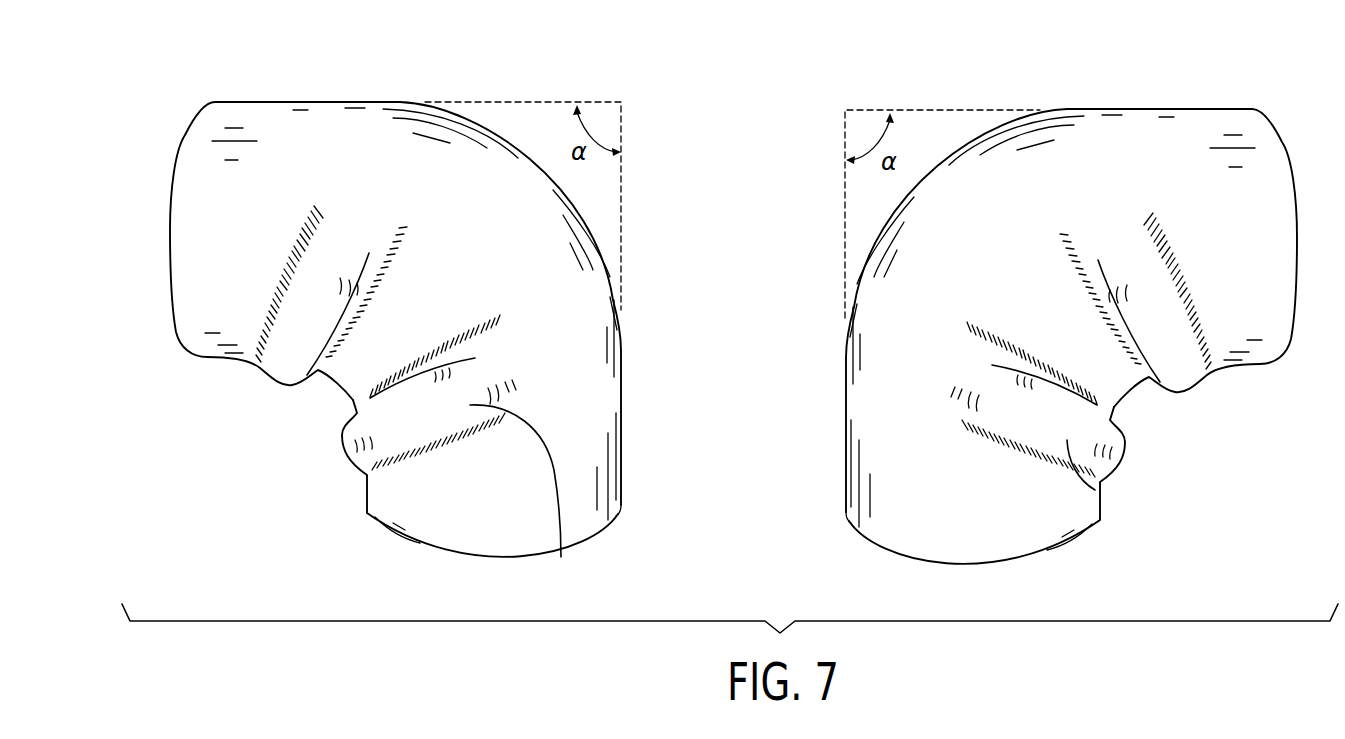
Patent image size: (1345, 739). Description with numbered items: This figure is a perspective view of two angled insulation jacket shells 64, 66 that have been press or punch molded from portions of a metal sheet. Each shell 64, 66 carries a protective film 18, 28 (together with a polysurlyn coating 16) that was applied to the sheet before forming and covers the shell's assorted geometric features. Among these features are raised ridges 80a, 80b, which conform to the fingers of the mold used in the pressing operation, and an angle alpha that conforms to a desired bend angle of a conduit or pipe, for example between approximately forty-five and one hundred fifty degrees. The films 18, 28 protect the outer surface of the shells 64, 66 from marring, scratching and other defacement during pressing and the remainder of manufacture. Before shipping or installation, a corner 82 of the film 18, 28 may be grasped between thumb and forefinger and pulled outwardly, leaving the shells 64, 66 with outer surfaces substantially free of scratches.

The polysurlyn coating 16 is at (528, 162).
The film 18 is at (203, 132).
The film 28 is at (732, 230).
The raised ridge 80a is at (561, 557).
The raised ridge 80b is at (346, 255).
The corner 82 is at (623, 513).
The shell 64 is at (497, 558).
The shell 66 is at (972, 565).